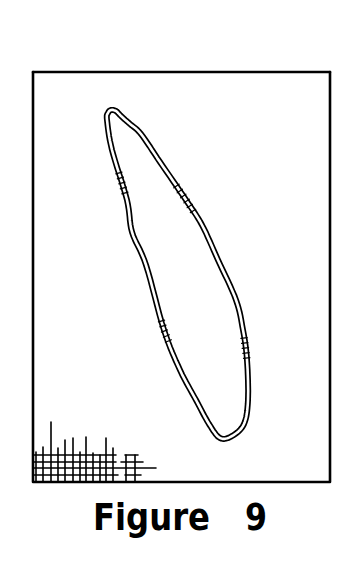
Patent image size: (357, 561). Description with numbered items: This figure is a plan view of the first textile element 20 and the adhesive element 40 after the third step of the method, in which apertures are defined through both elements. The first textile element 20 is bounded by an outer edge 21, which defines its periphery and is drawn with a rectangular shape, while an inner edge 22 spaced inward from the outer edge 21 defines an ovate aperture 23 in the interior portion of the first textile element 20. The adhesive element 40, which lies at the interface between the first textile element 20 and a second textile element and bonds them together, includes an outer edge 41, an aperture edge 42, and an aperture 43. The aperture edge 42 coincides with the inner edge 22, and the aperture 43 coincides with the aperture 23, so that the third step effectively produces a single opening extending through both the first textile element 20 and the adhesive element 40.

The first textile element 20 is at (272, 82).
The outer edge 21 is at (168, 71).
The inner edge 22 is at (168, 316).
The aperture 23 is at (155, 220).
The adhesive element 40 is at (161, 163).
The outer edge 41 is at (233, 290).
The aperture edge 42 is at (233, 300).
The aperture 43 is at (182, 230).